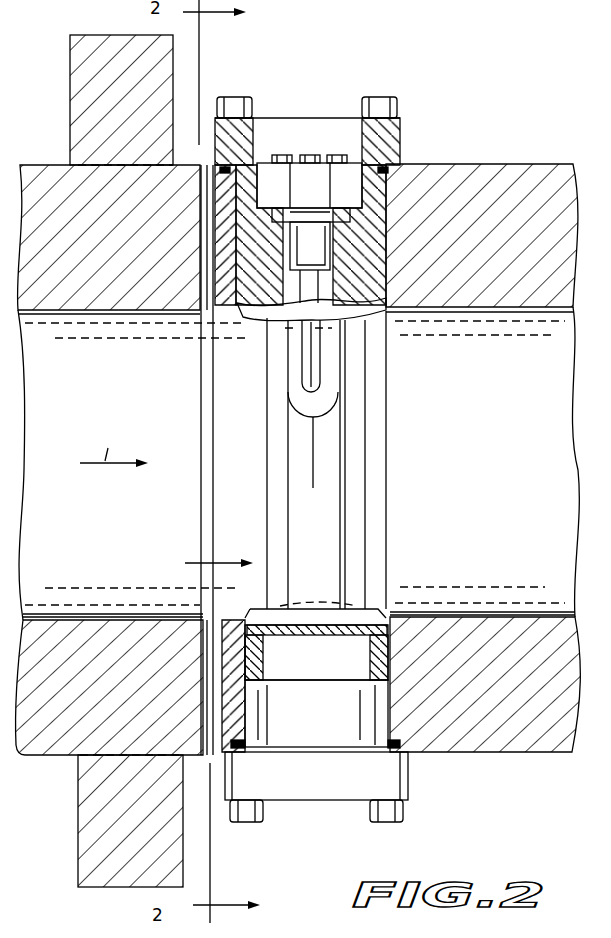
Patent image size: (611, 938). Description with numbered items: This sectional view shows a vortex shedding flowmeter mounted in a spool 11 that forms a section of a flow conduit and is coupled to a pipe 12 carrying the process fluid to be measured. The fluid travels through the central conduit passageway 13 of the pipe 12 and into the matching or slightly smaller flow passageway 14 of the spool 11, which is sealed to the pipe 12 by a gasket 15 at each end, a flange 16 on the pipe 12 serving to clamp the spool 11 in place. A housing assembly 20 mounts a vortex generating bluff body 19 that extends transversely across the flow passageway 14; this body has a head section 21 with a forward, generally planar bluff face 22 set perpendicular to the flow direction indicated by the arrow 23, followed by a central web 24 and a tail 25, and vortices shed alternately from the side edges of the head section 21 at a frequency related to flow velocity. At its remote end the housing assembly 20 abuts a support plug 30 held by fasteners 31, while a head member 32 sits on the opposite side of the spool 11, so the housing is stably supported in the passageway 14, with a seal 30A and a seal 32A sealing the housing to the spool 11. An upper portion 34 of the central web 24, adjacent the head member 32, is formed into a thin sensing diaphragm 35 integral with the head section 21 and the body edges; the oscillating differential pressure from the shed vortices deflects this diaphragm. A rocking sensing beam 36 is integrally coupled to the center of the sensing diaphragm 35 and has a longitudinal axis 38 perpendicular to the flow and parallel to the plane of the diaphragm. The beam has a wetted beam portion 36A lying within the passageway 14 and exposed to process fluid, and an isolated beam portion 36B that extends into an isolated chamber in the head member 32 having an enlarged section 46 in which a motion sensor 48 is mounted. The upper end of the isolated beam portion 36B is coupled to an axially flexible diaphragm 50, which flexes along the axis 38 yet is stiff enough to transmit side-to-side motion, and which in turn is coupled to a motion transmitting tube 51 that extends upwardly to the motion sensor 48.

The spool 11 is at (536, 162).
The pipe 12 is at (43, 170).
The central conduit passageway 13 is at (108, 517).
The flow passageway 14 is at (545, 522).
The gasket 15 is at (203, 655).
The flange 16 is at (78, 66).
The vortex generating bluff body 19 is at (205, 563).
The housing assembly 20 is at (347, 106).
The head section 21 is at (267, 420).
The bluff face 22 is at (267, 528).
The arrow 23 is at (114, 447).
The central web 24 is at (332, 510).
The tail 25 is at (358, 562).
The support plug 30 is at (345, 765).
The seal 30A is at (342, 732).
The fasteners 31 is at (407, 808).
The head member 32 is at (400, 145).
The seal 32A is at (400, 162).
The upper portion 34 is at (352, 423).
The sensing diaphragm 35 is at (322, 396).
The sensing beam 36 is at (322, 370).
The wetted beam portion 36A is at (302, 370).
The isolated beam portion 36B is at (320, 322).
The longitudinal axis 38 is at (313, 465).
The enlarged section 46 is at (347, 140).
The motion sensor 48 is at (305, 178).
The axially flexible diaphragm 50 is at (305, 272).
The motion transmitting tube 51 is at (320, 242).